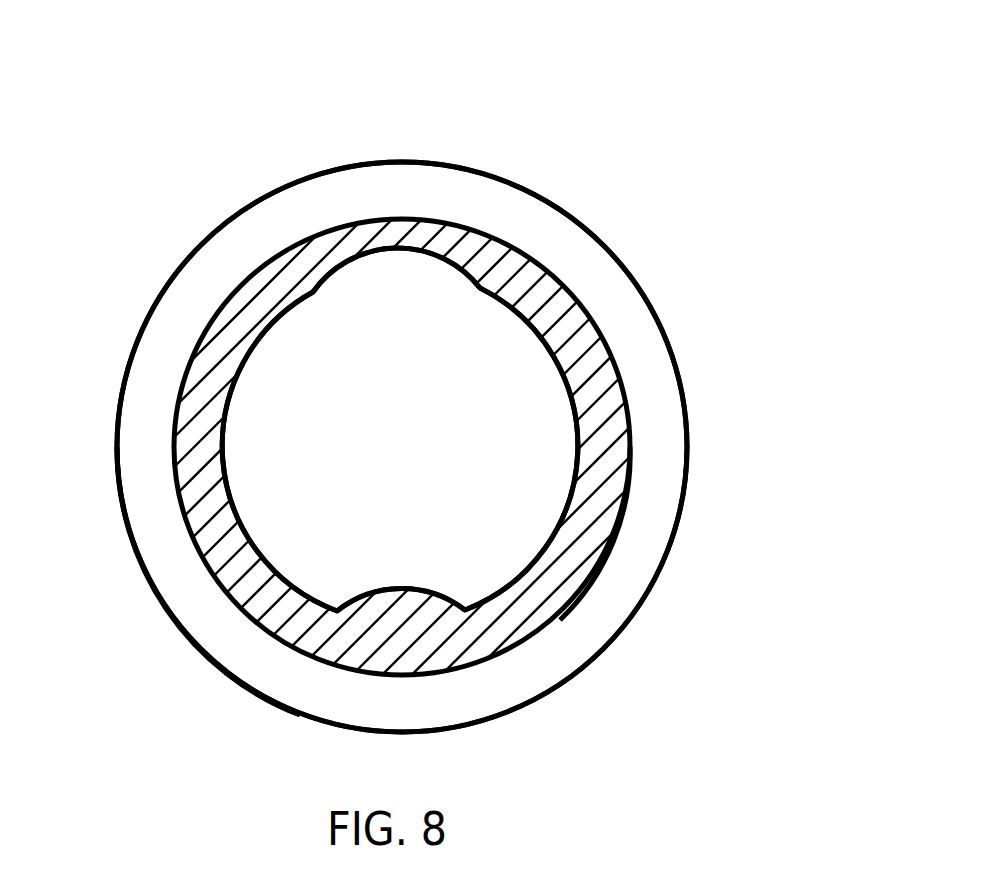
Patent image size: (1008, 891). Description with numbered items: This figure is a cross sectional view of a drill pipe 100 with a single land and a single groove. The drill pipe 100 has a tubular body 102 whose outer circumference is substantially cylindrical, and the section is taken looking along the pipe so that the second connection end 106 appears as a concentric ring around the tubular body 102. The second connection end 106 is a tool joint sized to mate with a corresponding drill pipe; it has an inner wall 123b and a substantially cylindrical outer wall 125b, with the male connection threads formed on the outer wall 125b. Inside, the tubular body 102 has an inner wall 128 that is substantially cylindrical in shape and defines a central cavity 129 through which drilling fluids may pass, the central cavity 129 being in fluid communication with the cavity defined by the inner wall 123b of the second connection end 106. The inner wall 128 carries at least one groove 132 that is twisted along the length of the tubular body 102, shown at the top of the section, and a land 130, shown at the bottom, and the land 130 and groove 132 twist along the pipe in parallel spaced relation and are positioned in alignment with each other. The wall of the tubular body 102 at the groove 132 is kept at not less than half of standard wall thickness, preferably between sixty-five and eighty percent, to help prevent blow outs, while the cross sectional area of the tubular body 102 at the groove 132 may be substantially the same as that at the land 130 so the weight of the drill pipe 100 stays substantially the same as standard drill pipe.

The drill pipe 100 is at (665, 79).
The second connection end 106 is at (601, 238).
The outer wall 125b is at (174, 622).
The tubular body 102 is at (212, 347).
The inner wall 123b is at (620, 489).
The inner wall 128 is at (566, 380).
The central cavity 129 is at (285, 442).
The groove 132 is at (388, 247).
The land 130 is at (438, 592).